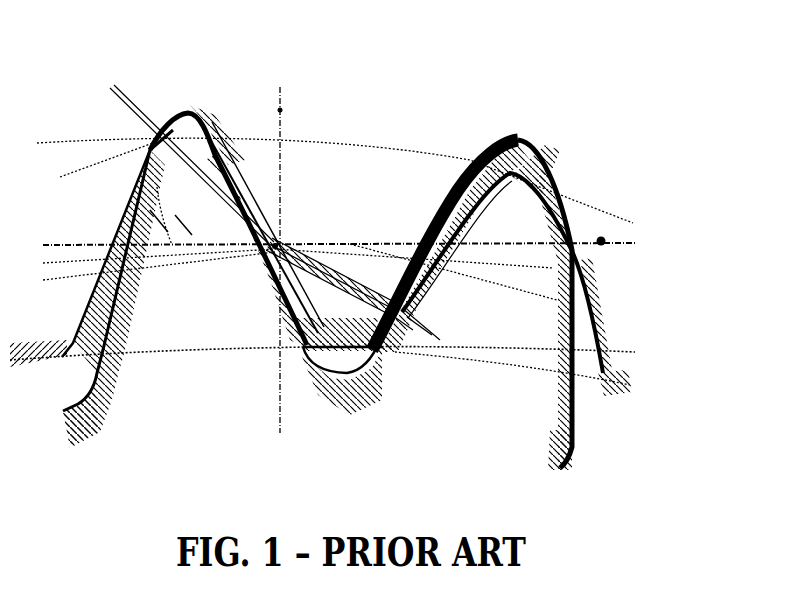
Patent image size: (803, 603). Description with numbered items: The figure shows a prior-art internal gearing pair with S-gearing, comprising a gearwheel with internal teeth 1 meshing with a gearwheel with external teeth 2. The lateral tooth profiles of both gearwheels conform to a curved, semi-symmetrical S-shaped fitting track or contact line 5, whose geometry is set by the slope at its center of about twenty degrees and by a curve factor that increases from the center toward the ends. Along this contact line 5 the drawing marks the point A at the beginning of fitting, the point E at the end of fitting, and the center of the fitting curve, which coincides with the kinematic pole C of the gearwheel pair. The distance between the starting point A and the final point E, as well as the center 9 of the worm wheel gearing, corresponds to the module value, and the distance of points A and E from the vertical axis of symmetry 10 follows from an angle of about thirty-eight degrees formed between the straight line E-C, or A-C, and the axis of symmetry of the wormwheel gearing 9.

The internal teeth 1 is at (550, 150).
The external teeth 2 is at (572, 398).
The fitting track or contact line 5 is at (240, 172).
The center of the worm wheel gearing 9 is at (602, 240).
The vertical axis of symmetry 10 is at (280, 110).
The point E is at (178, 144).
The kinematic pole C is at (278, 248).
The point A is at (403, 333).